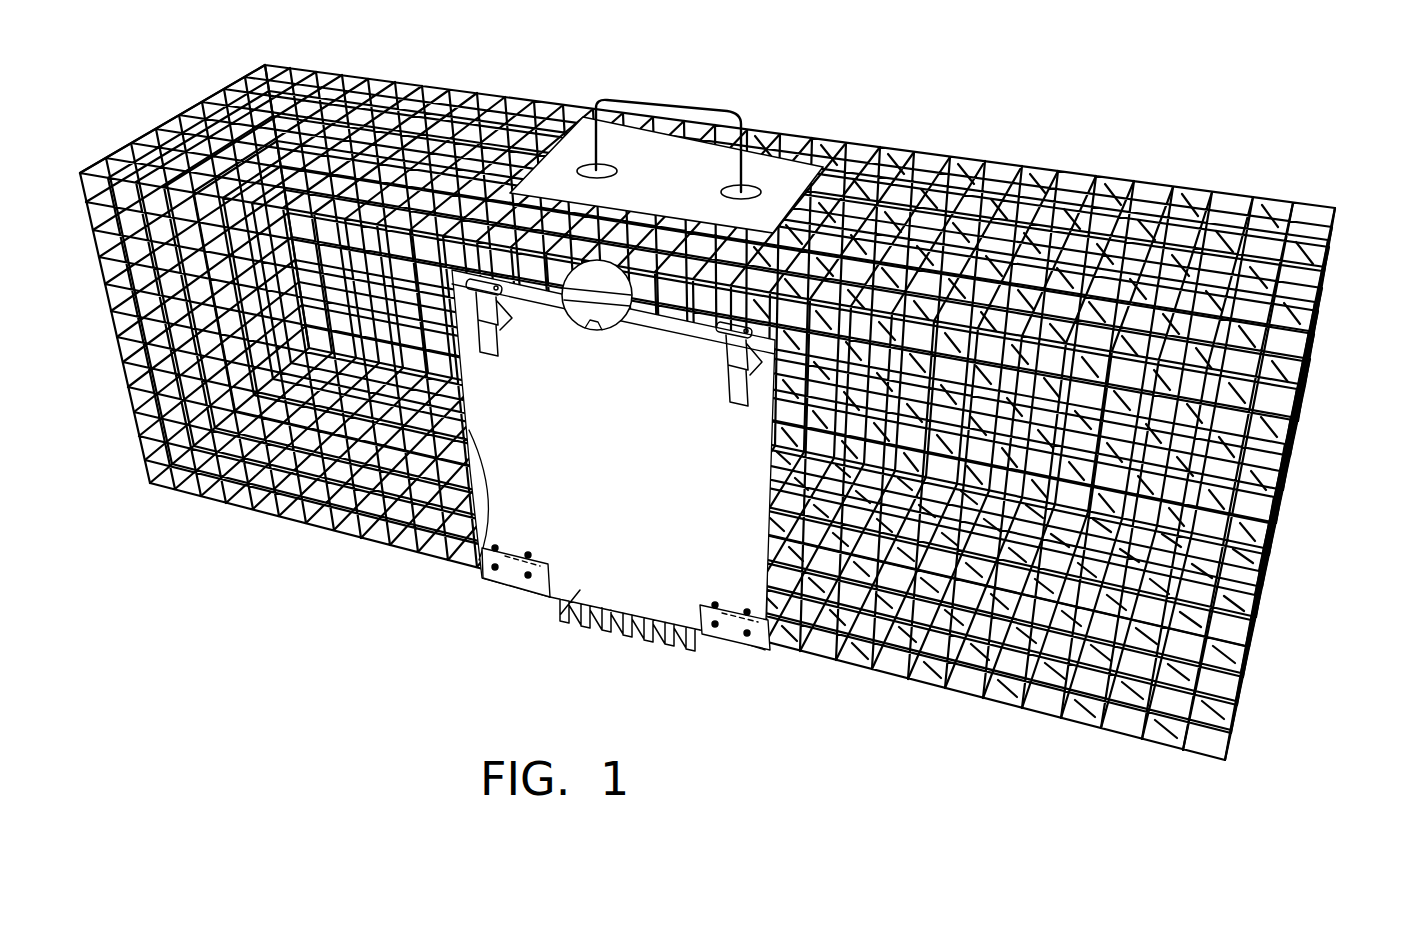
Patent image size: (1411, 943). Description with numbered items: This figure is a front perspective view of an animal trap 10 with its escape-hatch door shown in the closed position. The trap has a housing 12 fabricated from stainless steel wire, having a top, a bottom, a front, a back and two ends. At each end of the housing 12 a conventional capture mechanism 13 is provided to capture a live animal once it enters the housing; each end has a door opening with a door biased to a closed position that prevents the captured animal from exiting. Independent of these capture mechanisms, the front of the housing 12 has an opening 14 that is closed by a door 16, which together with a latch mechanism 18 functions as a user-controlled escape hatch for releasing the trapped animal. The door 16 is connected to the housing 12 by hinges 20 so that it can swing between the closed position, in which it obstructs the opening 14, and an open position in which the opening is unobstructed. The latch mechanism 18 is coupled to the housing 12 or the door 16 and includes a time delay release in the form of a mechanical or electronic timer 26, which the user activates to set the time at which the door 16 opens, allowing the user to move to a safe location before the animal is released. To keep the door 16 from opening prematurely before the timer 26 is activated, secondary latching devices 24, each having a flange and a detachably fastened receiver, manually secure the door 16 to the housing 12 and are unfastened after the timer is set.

The animal trap 10 is at (848, 99).
The housing 12 is at (1047, 180).
The capture mechanisms 13 is at (1310, 410).
The opening 14 is at (477, 557).
The door 16 is at (700, 560).
The latch mechanism 18 is at (580, 324).
The hinges 20 is at (508, 583).
The secondary latching device 24 is at (473, 347).
The timer 26 is at (633, 212).